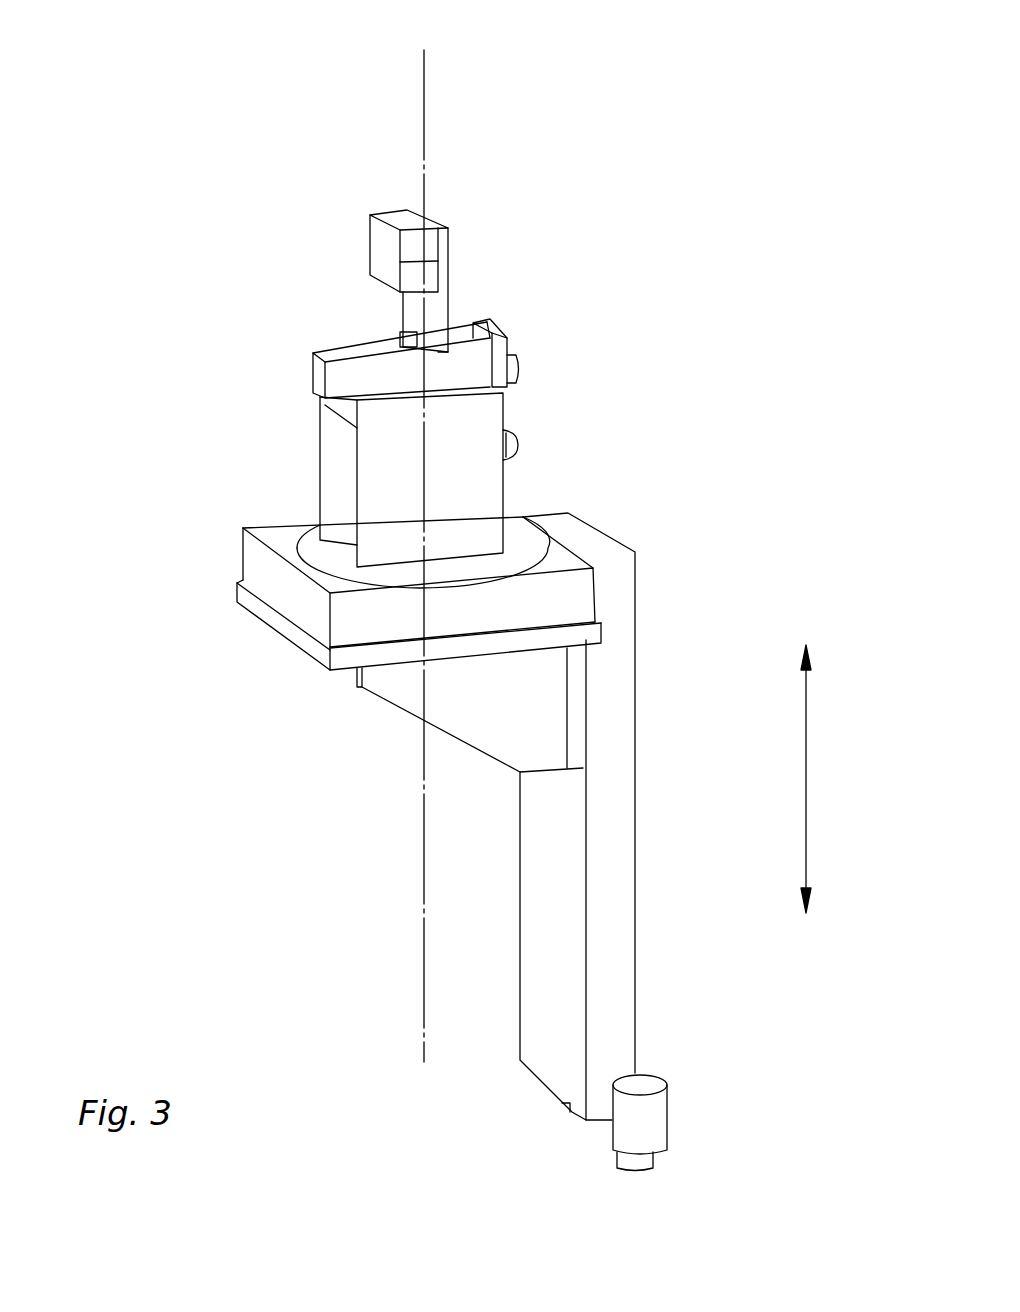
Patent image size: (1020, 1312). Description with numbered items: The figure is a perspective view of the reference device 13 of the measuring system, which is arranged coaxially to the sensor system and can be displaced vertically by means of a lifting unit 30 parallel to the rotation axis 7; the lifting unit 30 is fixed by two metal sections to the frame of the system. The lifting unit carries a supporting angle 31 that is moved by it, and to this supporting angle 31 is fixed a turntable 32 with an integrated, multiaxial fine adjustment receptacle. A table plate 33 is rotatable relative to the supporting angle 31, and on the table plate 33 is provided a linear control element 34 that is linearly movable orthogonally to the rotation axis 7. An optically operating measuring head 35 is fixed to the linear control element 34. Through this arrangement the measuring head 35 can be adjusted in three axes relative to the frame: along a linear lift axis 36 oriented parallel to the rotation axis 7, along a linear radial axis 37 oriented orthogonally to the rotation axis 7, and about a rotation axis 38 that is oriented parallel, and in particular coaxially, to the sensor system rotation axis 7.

The rotation axis 7 is at (424, 84).
The reference device 13 is at (550, 188).
The lifting unit 30 is at (613, 818).
The supporting angle 31 is at (387, 681).
The turntable 32 is at (547, 560).
The table plate 33 is at (313, 548).
The linear control element 34 is at (483, 377).
The measuring head 35 is at (382, 245).
The linear lift axis 36 is at (807, 760).
The linear radial axis 37 is at (284, 387).
The rotation axis 38 is at (422, 495).